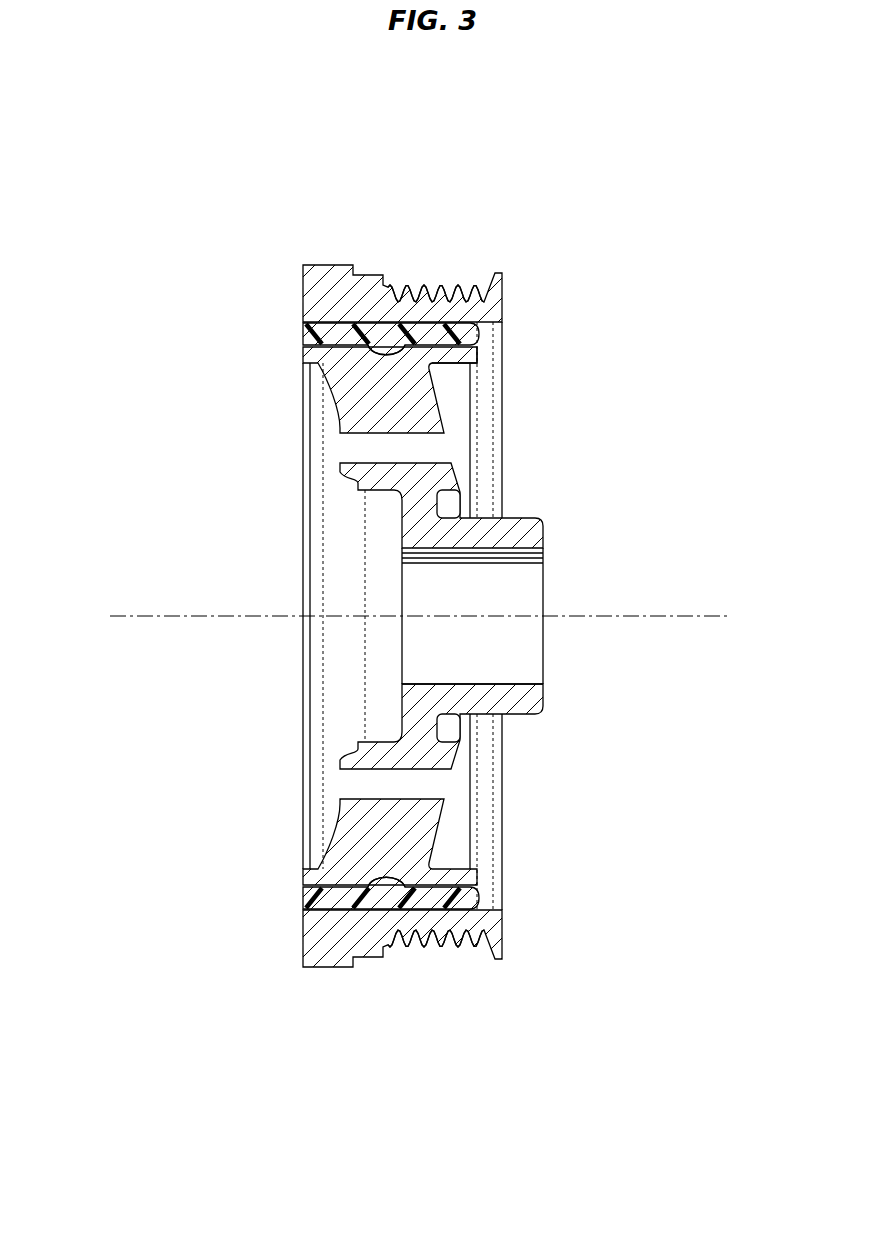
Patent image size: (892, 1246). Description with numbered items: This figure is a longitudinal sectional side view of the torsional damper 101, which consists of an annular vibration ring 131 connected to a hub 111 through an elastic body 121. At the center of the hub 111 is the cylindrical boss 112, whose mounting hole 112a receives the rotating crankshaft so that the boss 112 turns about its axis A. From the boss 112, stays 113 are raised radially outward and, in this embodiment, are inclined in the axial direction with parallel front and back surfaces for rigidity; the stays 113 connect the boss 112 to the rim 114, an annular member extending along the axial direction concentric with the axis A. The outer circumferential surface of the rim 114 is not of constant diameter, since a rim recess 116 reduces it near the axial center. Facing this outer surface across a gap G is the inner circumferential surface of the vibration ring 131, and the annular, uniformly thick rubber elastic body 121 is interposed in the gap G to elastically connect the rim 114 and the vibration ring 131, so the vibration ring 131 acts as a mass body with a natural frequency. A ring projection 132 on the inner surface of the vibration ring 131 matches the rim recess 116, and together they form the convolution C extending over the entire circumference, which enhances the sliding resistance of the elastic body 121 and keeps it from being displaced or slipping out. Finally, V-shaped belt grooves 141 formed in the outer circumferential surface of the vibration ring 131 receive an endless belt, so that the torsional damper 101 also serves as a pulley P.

The torsional damper 101 is at (247, 253).
The hub 111 is at (287, 513).
The boss 112 is at (520, 517).
The mounting hole 112a is at (507, 650).
The stays 113 is at (340, 413).
The rim 114 is at (477, 872).
The rim recess 116 is at (390, 349).
The elastic body 121 is at (303, 903).
The vibration ring 131 is at (303, 938).
The ring projection 132 is at (432, 368).
The belt grooves 141 is at (465, 950).
The axis A is at (703, 617).
The convolution C is at (430, 245).
The pulley P is at (563, 235).
The gap G is at (480, 902).